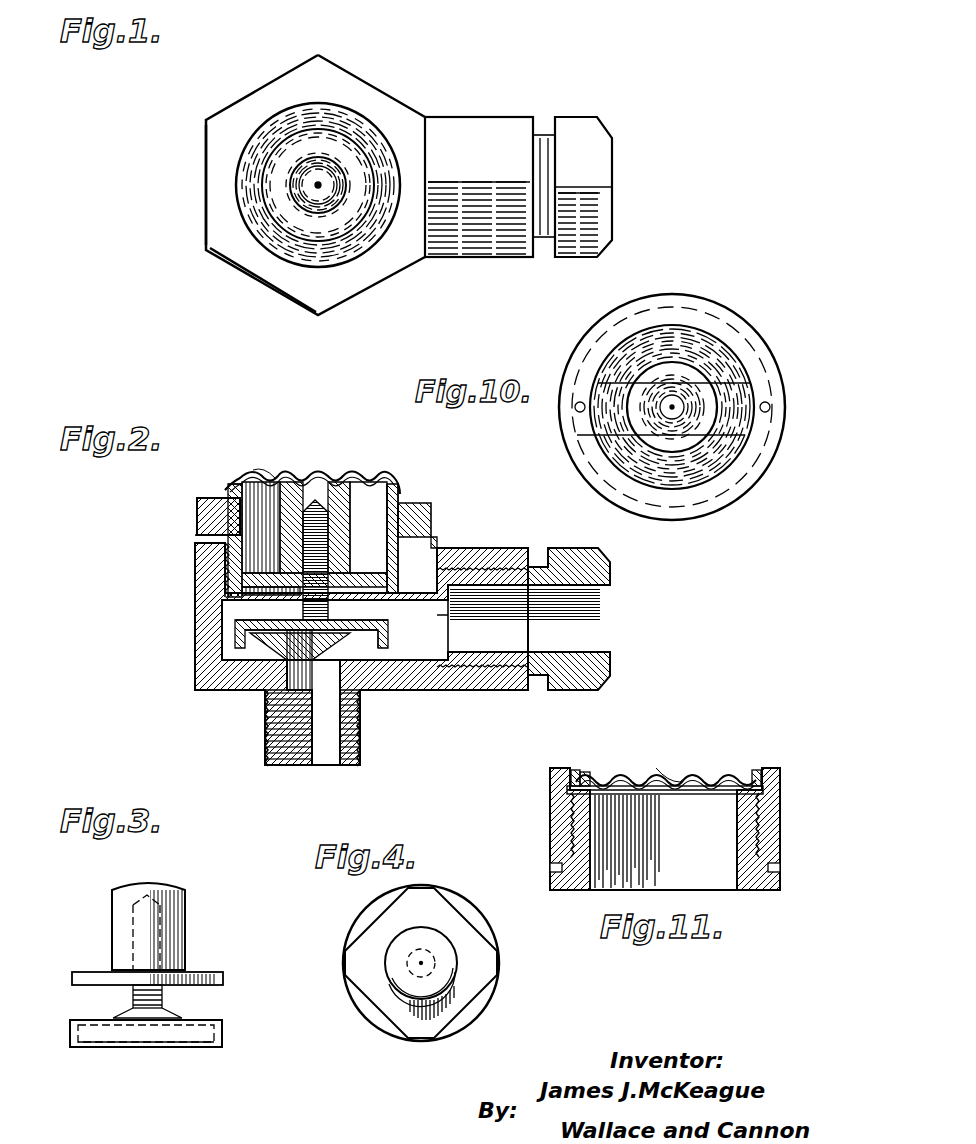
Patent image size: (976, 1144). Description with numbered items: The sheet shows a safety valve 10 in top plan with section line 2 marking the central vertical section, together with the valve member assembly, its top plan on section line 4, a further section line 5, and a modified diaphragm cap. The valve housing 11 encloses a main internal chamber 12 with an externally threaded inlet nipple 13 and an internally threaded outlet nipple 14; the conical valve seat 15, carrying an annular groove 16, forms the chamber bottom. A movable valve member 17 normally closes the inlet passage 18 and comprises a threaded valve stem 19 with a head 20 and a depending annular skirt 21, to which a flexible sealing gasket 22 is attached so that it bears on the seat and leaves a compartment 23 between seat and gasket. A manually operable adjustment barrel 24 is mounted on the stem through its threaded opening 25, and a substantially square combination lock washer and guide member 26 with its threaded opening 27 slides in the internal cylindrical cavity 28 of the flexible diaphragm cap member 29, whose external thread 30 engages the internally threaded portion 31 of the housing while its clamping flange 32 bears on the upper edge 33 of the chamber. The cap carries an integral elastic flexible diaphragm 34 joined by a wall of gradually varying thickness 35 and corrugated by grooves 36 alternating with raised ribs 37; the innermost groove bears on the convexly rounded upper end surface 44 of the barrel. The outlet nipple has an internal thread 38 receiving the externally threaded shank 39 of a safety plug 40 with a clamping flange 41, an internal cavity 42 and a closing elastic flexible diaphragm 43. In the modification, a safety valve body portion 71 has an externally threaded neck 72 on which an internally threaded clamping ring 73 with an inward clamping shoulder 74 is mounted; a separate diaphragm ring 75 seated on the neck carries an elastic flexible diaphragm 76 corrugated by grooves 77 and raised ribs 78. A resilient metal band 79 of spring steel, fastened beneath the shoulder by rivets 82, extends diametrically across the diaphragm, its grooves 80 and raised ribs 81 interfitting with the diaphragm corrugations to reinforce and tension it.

In FIG. 1, the section line 2— 2 is at (152, 150).
In FIG. 3, the section line 4— 4 is at (52, 905).
In FIG. 2, the section line 5— 5 is at (148, 665).
In FIG. 1, the safety valve 10 is at (338, 311).
In FIG. 2, the safety valve 10 is at (204, 692).
In FIG. 1, the valve housing 11 is at (452, 256).
In FIG. 10, the valve housing 11 is at (543, 372).
In FIG. 2, the valve housing 11 is at (402, 692).
In FIG. 2, the main internal chamber 12 is at (222, 620).
In FIG. 2, the inlet nipple 13 is at (362, 752).
In FIG. 1, the outlet nipple 14 is at (506, 256).
In FIG. 2, the outlet nipple 14 is at (448, 692).
In FIG. 2, the valve seat 15 is at (440, 624).
In FIG. 2, the annular groove 16 is at (386, 620).
In FIG. 2, the movable valve member 17 is at (355, 606).
In FIG. 3, the movable valve member 17 is at (216, 1022).
In FIG. 4, the movable valve member 17 is at (370, 1008).
In FIG. 2, the inlet passage 18 is at (300, 720).
In FIG. 2, the valve stem 19 is at (402, 508).
In FIG. 3, the valve stem 19 is at (164, 1000).
In FIG. 4, the valve stem 19 is at (436, 950).
In FIG. 2, the head 20 is at (300, 626).
In FIG. 3, the head 20 is at (90, 1020).
In FIG. 2, the depending annular skirt 21 is at (388, 640).
In FIG. 3, the depending annular skirt 21 is at (226, 1036).
In FIG. 2, the flexible sealing gasket 22 is at (300, 652).
In FIG. 3, the flexible sealing gasket 22 is at (185, 1032).
In FIG. 2, the compartment 23 is at (280, 652).
In FIG. 2, the manually operable adjustment barrel 24 is at (244, 512).
In FIG. 3, the manually operable adjustment barrel 24 is at (176, 930).
In FIG. 4, the manually operable adjustment barrel 24 is at (448, 966).
In FIG. 2, the threaded opening 25 is at (330, 520).
In FIG. 2, the combination lock washer and guide member 26 is at (240, 592).
In FIG. 3, the combination lock washer and guide member 26 is at (206, 977).
In FIG. 4, the combination lock washer and guide member 26 is at (462, 990).
In FIG. 2, the threaded opening 27 is at (346, 580).
In FIG. 2, the internal cylindrical cavity 28 is at (400, 490).
In FIG. 1, the flexible diaphragm cap member 29 is at (296, 286).
In FIG. 2, the flexible diaphragm cap member 29 is at (222, 568).
In FIG. 2, the external thread 30 is at (222, 550).
In FIG. 2, the internally threaded portion 31 is at (222, 585).
In FIG. 1, the clamping flange 32 is at (216, 226).
In FIG. 2, the clamping flange 32 is at (432, 510).
In FIG. 2, the upper edge 33 is at (434, 532).
In FIG. 1, the elastic flexible diaphragm 34 is at (358, 110).
In FIG. 2, the elastic flexible diaphragm 34 is at (400, 473).
In FIG. 2, the wall of gradually varying thickness 35 is at (236, 477).
In FIG. 1, the grooves 36 is at (350, 237).
In FIG. 2, the grooves 36 is at (300, 478).
In FIG. 1, the raised annular concentric ribs 37 is at (268, 248).
In FIG. 2, the raised annular concentric ribs 37 is at (262, 470).
In FIG. 2, the internal thread 38 is at (472, 670).
In FIG. 1, the externally threaded shank 39 is at (545, 134).
In FIG. 2, the externally threaded shank 39 is at (520, 692).
In FIG. 1, the safety plug 40 is at (586, 258).
In FIG. 2, the safety plug 40 is at (576, 692).
In FIG. 2, the clamping flange 41 is at (582, 540).
In FIG. 2, the internal cavity 42 is at (608, 640).
In FIG. 1, the elastic flexible diaphragm 43 is at (616, 162).
In FIG. 2, the elastic flexible diaphragm 43 is at (606, 600).
In FIG. 2, the convexly rounded upper end surface 44 is at (238, 488).
In FIG. 11, the safety valve body portion 71 is at (760, 892).
In FIG. 10, the externally threaded neck 72 is at (718, 500).
In FIG. 11, the externally threaded neck 72 is at (752, 845).
In FIG. 11, the clamping ring 73 is at (560, 820).
In FIG. 10, the clamping shoulder 74 is at (760, 460).
In FIG. 11, the clamping shoulder 74 is at (785, 765).
In FIG. 11, the diaphragm ring 75 is at (566, 790).
In FIG. 10, the elastic flexible diaphragm 76 is at (688, 478).
In FIG. 11, the elastic flexible diaphragm 76 is at (740, 778).
In FIG. 10, the grooves 77 is at (708, 360).
In FIG. 11, the grooves 77 is at (732, 788).
In FIG. 10, the raised ribs 78 is at (622, 455).
In FIG. 11, the raised ribs 78 is at (702, 792).
In FIG. 10, the resilient metal band 79 is at (700, 430).
In FIG. 11, the resilient metal band 79 is at (590, 775).
In FIG. 11, the grooves 80 is at (720, 772).
In FIG. 11, the raised ribs 81 is at (690, 775).
In FIG. 10, the rivets 82 is at (768, 400).
In FIG. 11, the rivets 82 is at (575, 772).